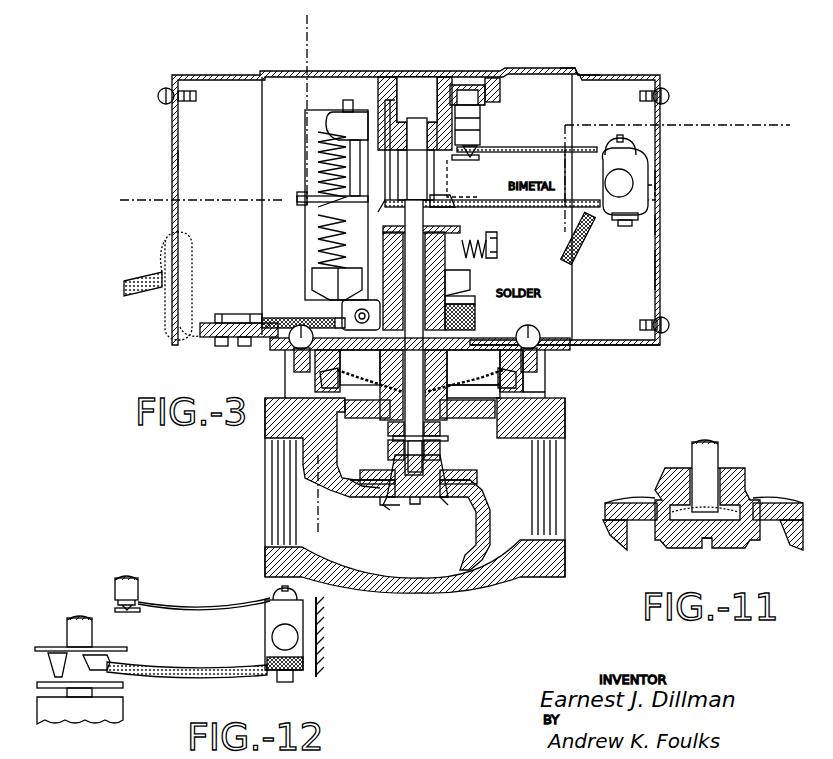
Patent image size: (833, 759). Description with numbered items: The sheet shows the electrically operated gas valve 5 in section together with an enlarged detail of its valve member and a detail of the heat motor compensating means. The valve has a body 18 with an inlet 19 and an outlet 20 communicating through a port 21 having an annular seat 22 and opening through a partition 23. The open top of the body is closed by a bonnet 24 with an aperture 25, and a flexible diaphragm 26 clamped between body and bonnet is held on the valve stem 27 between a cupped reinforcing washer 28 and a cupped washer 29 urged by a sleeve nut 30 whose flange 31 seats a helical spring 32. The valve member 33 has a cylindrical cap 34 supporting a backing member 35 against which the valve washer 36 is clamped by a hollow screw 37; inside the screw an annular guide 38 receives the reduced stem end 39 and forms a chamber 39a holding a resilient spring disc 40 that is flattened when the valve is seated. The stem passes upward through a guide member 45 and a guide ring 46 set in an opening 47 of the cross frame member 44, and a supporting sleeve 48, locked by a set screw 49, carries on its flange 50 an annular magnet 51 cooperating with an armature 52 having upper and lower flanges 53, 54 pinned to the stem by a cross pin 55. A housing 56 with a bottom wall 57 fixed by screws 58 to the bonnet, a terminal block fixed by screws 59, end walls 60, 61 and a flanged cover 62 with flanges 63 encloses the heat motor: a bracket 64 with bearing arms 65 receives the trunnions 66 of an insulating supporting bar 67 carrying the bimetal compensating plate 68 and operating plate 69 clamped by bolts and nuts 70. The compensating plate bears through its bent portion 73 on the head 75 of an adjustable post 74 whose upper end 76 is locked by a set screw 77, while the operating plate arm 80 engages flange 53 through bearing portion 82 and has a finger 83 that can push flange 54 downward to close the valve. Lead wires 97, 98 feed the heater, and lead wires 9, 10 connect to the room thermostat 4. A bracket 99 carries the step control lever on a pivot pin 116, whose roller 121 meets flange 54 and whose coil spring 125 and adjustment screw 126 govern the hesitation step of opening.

In FIG. 3, the temperature responsive control switch 4 is at (733, 153).
In FIG. 3, the electrically operated valve 5 is at (340, 504).
In FIG. 3, the lead wire 9 is at (148, 293).
In FIG. 3, the lead wire 10 is at (150, 272).
In FIG. 3, the body 18 is at (428, 590).
In FIG. 3, the inlet 19 is at (265, 490).
In FIG. 3, the outlet 20 is at (560, 482).
In FIG. 3, the valve port 21 is at (447, 498).
In FIG. 3, the annular seat 22 is at (470, 483).
In FIG. 11, the annular seat 22 is at (790, 548).
In FIG. 3, the partition 23 is at (478, 530).
In FIG. 3, the bonnet 24 is at (540, 368).
In FIG. 3, the aperture 25 is at (470, 378).
In FIG. 3, the flexible diaphragm member 26 is at (475, 396).
In FIG. 3, the valve stem 27 is at (412, 337).
In FIG. 12, the valve stem 27 is at (80, 618).
In FIG. 3, the cupped metal reinforcing washer 28 is at (361, 378).
In FIG. 3, the cupped washer 29 is at (385, 406).
In FIG. 3, the sleeve nut 30 is at (445, 412).
In FIG. 3, the flange 31 is at (386, 450).
In FIG. 3, the helical spring 32 is at (386, 430).
In FIG. 3, the valve member 33 is at (380, 506).
In FIG. 3, the cylindrical cap 34 is at (450, 440).
In FIG. 3, the valve washer backing member 35 is at (360, 484).
In FIG. 3, the valve washer 36 is at (472, 468).
In FIG. 11, the valve washer 36 is at (605, 508).
In FIG. 3, the hollow screw 37 is at (430, 494).
In FIG. 11, the hollow screw 37 is at (745, 546).
In FIG. 3, the annular valve stem guide 38 is at (400, 487).
In FIG. 11, the annular valve stem guide 38 is at (678, 463).
In FIG. 3, the lower reduced stem end portion 39 is at (430, 458).
In FIG. 11, the lower reduced stem end portion 39 is at (720, 450).
In FIG. 11, the internal chamber 39a is at (676, 516).
In FIG. 3, the resilient spring disc 40 is at (420, 496).
In FIG. 11, the resilient spring disc 40 is at (705, 548).
In FIG. 3, the cross frame member 44 is at (450, 85).
In FIG. 3, the guide member 45 is at (378, 360).
In FIG. 3, the guide ring 46 is at (417, 99).
In FIG. 3, the vertical opening 47 is at (420, 90).
In FIG. 3, the supporting sleeve 48 is at (470, 305).
In FIG. 3, the set screw 49 is at (466, 322).
In FIG. 3, the flange 50 is at (453, 290).
In FIG. 3, the annular magnet 51 is at (470, 270).
In FIG. 12, the annular magnet 51 is at (115, 713).
In FIG. 3, the armature 52 is at (464, 193).
In FIG. 12, the armature 52 is at (95, 673).
In FIG. 3, the upper flange 53 is at (470, 204).
In FIG. 12, the upper flange 53 is at (120, 647).
In FIG. 3, the lower flange 54 is at (460, 233).
In FIG. 12, the lower flange 54 is at (37, 682).
In FIG. 3, the cross pin 55 is at (414, 281).
In FIG. 3, the housing 56 is at (692, 228).
In FIG. 3, the bottom wall 57 is at (620, 346).
In FIG. 3, the screws 58 is at (532, 337).
In FIG. 3, the screws 59 is at (255, 316).
In FIG. 3, the end wall 60 is at (205, 331).
In FIG. 3, the end wall 61 is at (170, 126).
In FIG. 3, the cover member 62 is at (600, 74).
In FIG. 3, the flanges 63 is at (170, 164).
In FIG. 3, the bracket 64 is at (660, 200).
In FIG. 3, the bearing arms 65 is at (615, 160).
In FIG. 3, the end trunnions 66 is at (619, 183).
In FIG. 3, the supporting bar 67 is at (604, 190).
In FIG. 12, the supporting bar 67 is at (265, 636).
In FIG. 3, the temperature responsive compensating element 68 is at (545, 153).
In FIG. 12, the temperature responsive compensating element 68 is at (225, 600).
In FIG. 3, the temperature responsive operating element 69 is at (539, 215).
In FIG. 12, the temperature responsive operating element 69 is at (215, 665).
In FIG. 3, the bolts and nuts 70 is at (636, 146).
In FIG. 3, the bearing portion 73 is at (471, 152).
In FIG. 3, the adjustable supporting post 74 is at (478, 130).
In FIG. 12, the adjustable supporting post 74 is at (128, 577).
In FIG. 3, the head 75 is at (470, 160).
In FIG. 12, the head 75 is at (140, 612).
In FIG. 3, the upper end portion 76 is at (478, 92).
In FIG. 3, the set screw 77 is at (500, 80).
In FIG. 12, the arm 80 is at (60, 652).
In FIG. 3, the bearing portion 82 is at (397, 200).
In FIG. 3, the finger 83 is at (390, 200).
In FIG. 3, the lead wire 97 is at (282, 317).
In FIG. 3, the lead wire 98 is at (310, 320).
In FIG. 3, the supporting bracket member 99 is at (298, 150).
In FIG. 3, the pivot pin 116 is at (308, 196).
In FIG. 3, the roller 121 is at (387, 210).
In FIG. 3, the coil spring 125 is at (318, 168).
In FIG. 3, the adjustment screw 126 is at (320, 216).